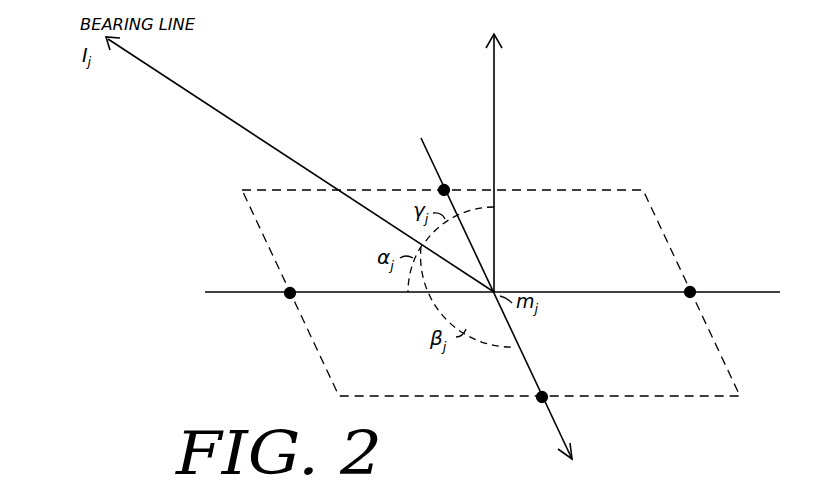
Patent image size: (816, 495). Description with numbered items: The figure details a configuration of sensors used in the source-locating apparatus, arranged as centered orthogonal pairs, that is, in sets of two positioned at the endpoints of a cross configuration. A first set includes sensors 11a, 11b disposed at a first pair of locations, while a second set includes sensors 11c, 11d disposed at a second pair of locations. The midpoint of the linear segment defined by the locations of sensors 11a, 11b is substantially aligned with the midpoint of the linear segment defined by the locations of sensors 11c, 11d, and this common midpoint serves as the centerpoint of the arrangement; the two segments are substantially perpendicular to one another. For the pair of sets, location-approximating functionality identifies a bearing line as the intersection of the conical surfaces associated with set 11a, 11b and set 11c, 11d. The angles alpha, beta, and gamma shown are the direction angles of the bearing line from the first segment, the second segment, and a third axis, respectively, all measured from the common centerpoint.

The sensor 11a is at (288, 298).
The sensor 11b is at (693, 286).
The sensor 11c is at (538, 402).
The sensor 11d is at (440, 188).